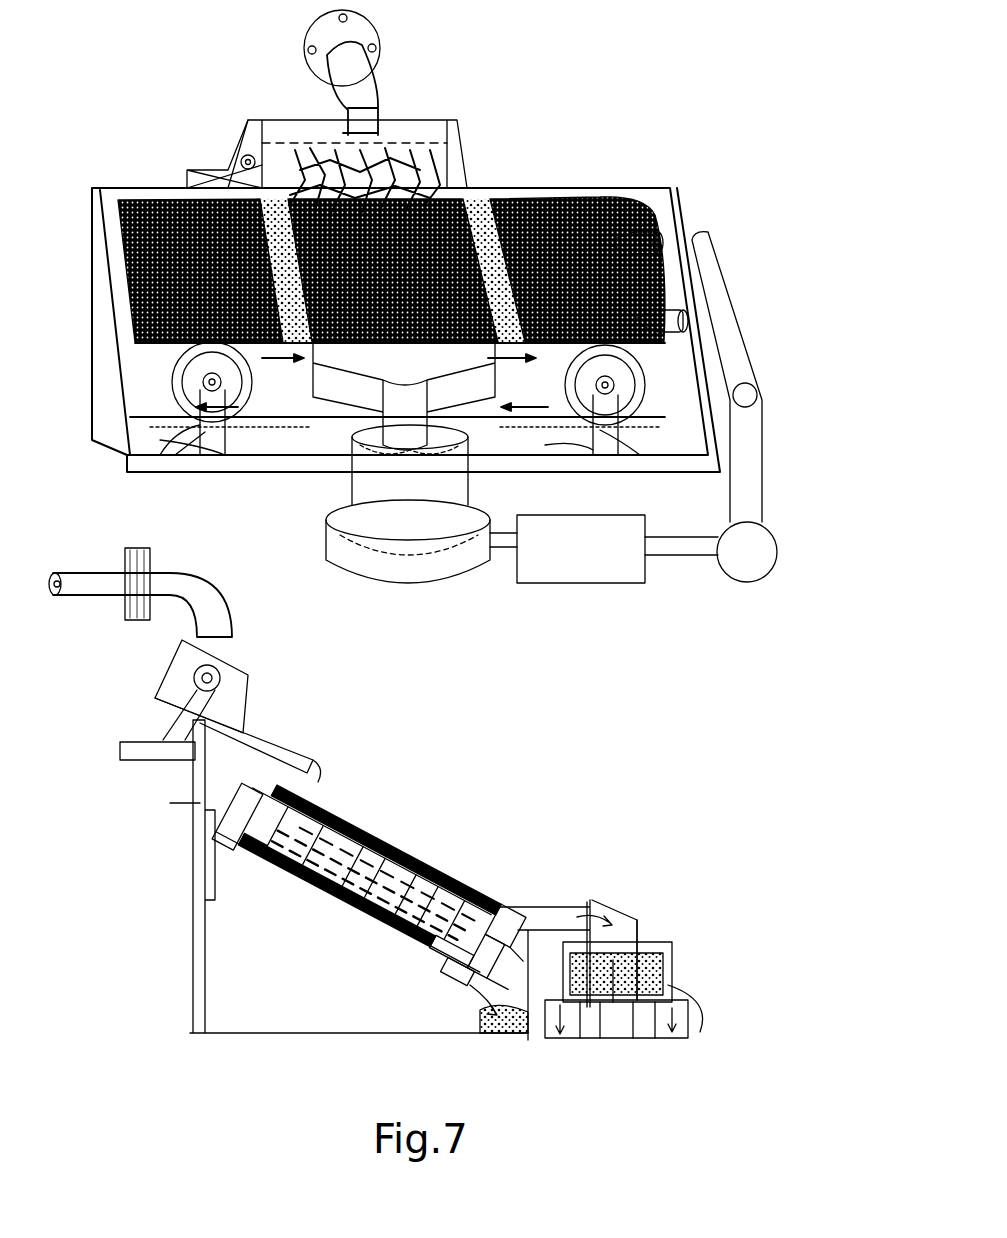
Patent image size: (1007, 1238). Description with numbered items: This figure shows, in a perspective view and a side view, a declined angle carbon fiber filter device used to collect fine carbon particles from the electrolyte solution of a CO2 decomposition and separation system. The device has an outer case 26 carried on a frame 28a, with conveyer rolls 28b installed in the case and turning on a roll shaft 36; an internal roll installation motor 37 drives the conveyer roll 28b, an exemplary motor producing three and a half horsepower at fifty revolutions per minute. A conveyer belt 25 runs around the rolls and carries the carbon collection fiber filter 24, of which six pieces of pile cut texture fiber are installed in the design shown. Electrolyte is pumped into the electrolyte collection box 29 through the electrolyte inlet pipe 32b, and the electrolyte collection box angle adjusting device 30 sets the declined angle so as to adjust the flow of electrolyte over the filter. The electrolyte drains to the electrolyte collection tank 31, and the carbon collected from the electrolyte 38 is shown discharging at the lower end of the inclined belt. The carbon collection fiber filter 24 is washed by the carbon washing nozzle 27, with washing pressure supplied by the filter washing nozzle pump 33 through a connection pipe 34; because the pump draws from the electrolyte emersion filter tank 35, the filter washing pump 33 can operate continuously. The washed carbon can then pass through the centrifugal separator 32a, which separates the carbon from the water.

The carbon collection fiber filter 24 is at (545, 198).
The conveyer belt 25 is at (175, 200).
The outer case 26 is at (670, 270).
The carbon washing nozzle 27 is at (697, 323).
The frame 28a is at (207, 430).
The conveyer roll 28b is at (197, 380).
The electrolyte collection box 29 is at (452, 165).
The electrolyte collection box angle adjusting device 30 is at (217, 167).
The electrolyte collection tank 31 is at (385, 565).
The centrifugal separator 32a is at (363, 500).
The electrolyte inlet pipe 32b is at (345, 62).
The filter washing nozzle pump 33 is at (737, 567).
The connection pipe 34 is at (745, 510).
The electrolyte emersion filter tank 35 is at (613, 572).
The roll shaft 36 is at (255, 860).
The internal roll installation motor 37 is at (347, 852).
The carbon collected from the electrolyte 38 is at (558, 917).